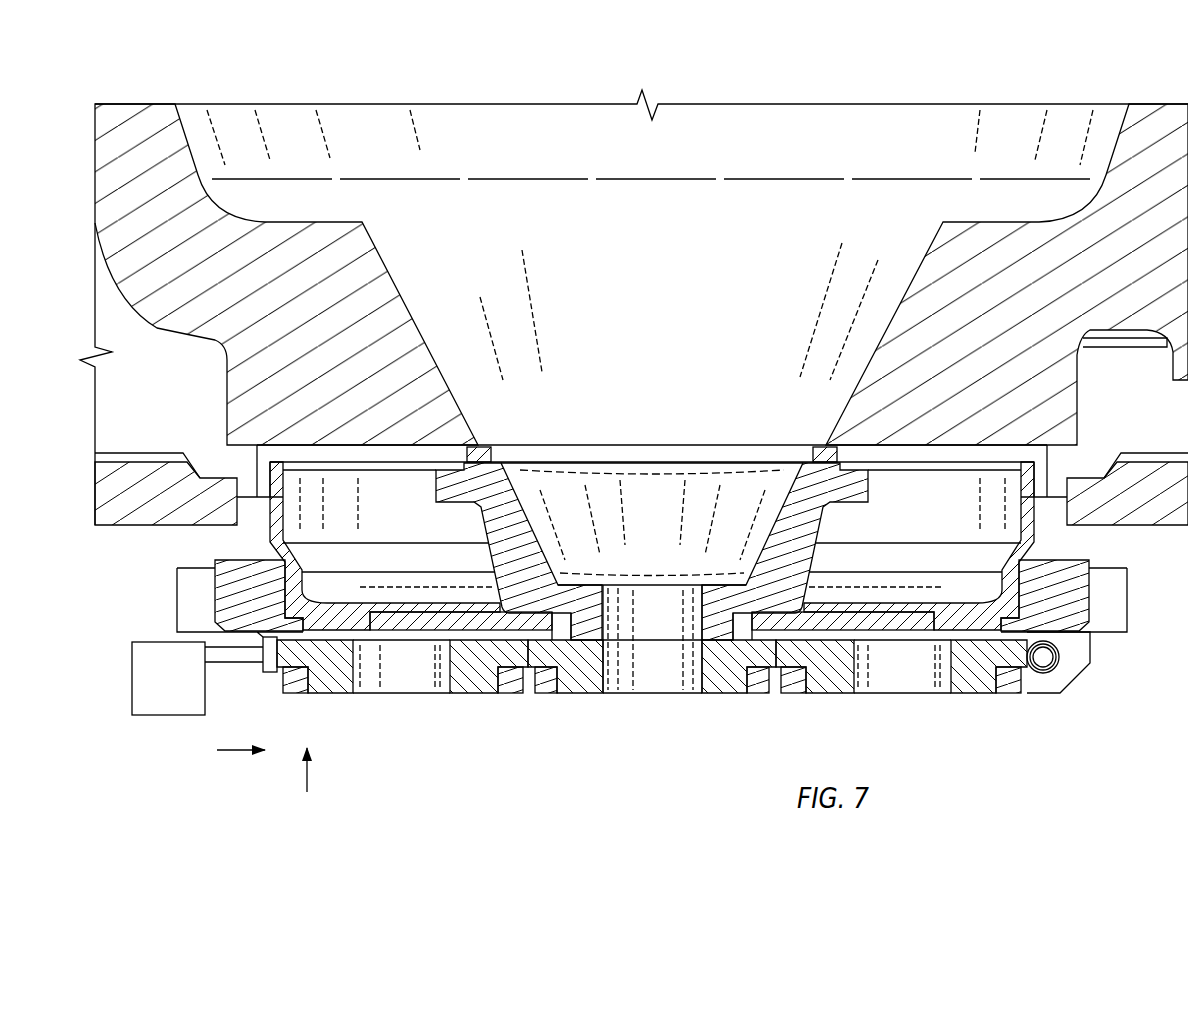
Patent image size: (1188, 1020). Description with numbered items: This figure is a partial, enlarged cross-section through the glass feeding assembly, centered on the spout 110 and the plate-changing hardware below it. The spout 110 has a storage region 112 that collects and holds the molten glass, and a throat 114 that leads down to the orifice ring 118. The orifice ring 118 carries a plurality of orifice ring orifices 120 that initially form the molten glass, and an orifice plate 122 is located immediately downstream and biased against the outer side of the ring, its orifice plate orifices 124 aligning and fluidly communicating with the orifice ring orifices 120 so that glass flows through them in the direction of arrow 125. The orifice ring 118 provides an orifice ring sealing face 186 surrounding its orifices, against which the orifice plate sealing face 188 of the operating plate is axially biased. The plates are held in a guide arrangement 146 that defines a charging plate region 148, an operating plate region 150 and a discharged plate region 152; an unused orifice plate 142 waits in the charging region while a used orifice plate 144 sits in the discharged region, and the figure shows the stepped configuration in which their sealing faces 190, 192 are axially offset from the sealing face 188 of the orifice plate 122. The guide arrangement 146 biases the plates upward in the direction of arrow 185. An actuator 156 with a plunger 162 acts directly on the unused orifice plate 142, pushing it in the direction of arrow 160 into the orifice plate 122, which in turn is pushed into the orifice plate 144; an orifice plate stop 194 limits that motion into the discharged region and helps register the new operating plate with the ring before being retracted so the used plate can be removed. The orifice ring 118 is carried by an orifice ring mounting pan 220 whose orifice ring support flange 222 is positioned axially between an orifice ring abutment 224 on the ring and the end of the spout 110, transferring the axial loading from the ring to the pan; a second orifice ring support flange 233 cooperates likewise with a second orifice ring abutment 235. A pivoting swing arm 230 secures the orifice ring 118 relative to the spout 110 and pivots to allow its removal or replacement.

The spout 110 is at (1133, 142).
The storage region 112 is at (668, 208).
The throat 114 is at (893, 332).
The orifice ring 118 is at (807, 523).
The orifice ring orifices 120 is at (679, 568).
The orifice plate 122 is at (727, 687).
The orifice plate orifices 124 is at (668, 703).
The arrow 125 is at (652, 536).
The unused orifice plate 142 is at (475, 685).
The used orifice plate 144 is at (977, 685).
The guide arrangement 146 is at (1087, 689).
The charging plate region 148 is at (395, 761).
The operating plate region 150 is at (695, 741).
The discharged plate region 152 is at (952, 741).
The actuator 156 is at (182, 736).
The arrow 160 is at (237, 753).
The plunger 162 is at (227, 663).
The arrow 185 is at (302, 773).
The orifice ring sealing face 186 is at (597, 643).
The orifice plate sealing face 188 is at (590, 640).
The orifice plate sealing face 190 is at (345, 640).
The orifice plate sealing face 192 is at (828, 640).
The orifice plate stop 194 is at (1043, 660).
The orifice ring mounting pan 220 is at (278, 498).
The orifice ring support flange 222 is at (373, 453).
The orifice ring abutment 224 is at (503, 446).
The swing arm 230 is at (250, 590).
The second orifice ring support flange 233 is at (513, 620).
The second orifice ring abutment 235 is at (553, 667).